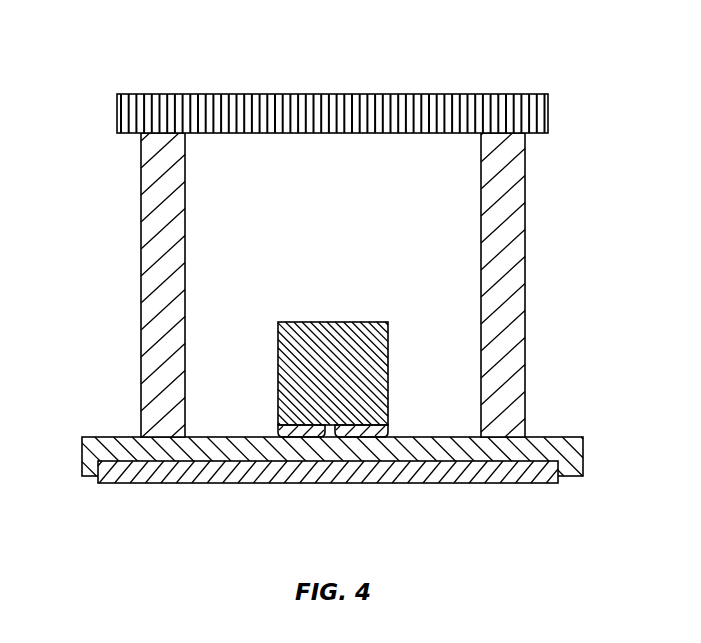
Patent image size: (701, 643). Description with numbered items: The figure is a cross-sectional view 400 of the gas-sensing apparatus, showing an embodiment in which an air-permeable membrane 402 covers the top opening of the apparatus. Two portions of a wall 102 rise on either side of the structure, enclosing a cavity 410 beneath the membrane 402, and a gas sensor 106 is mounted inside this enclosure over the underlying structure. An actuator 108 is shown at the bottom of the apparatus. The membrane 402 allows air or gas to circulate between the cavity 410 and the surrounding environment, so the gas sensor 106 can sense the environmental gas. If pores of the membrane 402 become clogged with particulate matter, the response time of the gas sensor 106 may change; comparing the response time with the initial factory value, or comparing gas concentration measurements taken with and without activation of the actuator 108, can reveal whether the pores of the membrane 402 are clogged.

The cross-sectional view 400 is at (72, 92).
The membrane 402 is at (331, 94).
The wall 102 is at (185, 175).
The gas sensor 106 is at (278, 375).
The actuator 108 is at (325, 483).
The cavity 410 is at (443, 212).